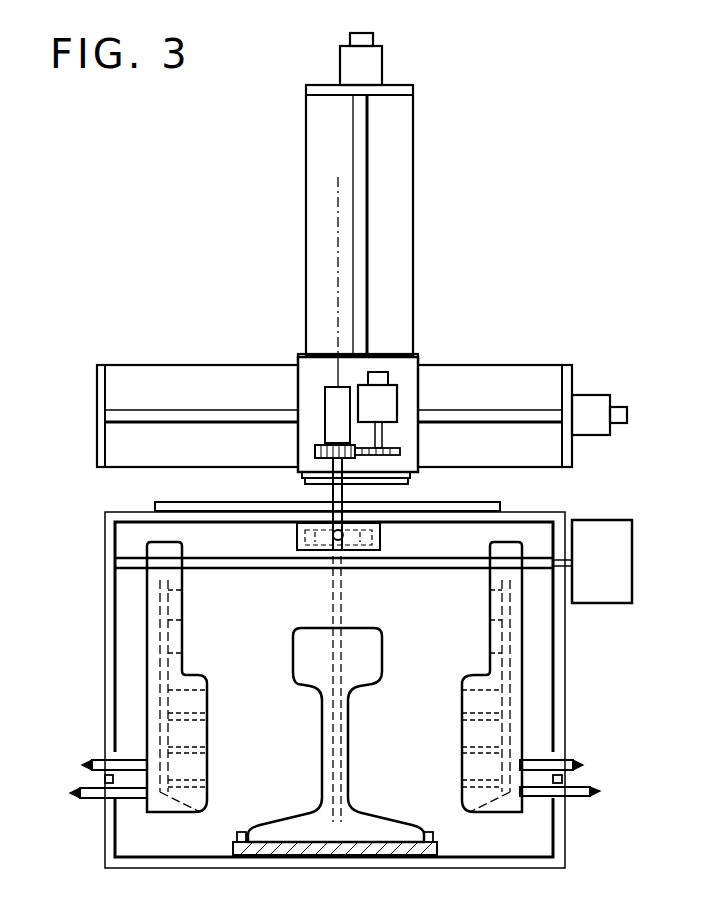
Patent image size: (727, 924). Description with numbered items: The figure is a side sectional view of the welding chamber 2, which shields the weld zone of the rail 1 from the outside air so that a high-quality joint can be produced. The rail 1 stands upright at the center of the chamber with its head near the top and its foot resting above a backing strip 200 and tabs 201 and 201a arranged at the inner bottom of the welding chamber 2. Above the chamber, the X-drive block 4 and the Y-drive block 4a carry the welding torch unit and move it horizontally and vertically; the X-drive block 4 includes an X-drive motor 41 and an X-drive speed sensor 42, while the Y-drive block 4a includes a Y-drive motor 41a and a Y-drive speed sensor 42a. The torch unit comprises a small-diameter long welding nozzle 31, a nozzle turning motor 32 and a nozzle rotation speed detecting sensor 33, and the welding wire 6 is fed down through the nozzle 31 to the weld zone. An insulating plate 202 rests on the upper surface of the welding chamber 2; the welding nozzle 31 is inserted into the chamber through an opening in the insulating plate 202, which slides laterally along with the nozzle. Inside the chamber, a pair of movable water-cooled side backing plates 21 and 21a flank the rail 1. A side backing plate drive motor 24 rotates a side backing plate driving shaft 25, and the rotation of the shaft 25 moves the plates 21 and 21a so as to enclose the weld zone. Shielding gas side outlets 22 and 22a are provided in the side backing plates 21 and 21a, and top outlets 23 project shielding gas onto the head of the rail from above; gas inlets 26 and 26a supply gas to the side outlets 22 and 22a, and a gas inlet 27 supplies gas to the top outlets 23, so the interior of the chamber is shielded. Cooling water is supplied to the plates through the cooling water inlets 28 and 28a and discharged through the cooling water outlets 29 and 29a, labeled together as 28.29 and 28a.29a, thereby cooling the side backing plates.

The rail 1 is at (305, 672).
The welding chamber 2 is at (105, 578).
The X-drive block 4 is at (505, 365).
The Y-drive block 4a is at (395, 228).
The welding wire 6 is at (336, 256).
The movable water-cooled side backing plate 21 is at (522, 705).
The movable water-cooled side backing plate 21a is at (147, 658).
The shielding gas side outlet 22 is at (490, 653).
The shielding gas side outlet 22a is at (182, 653).
The top outlet 23 is at (297, 537).
The side backing plate drive motor 24 is at (632, 585).
The side backing plate driving shaft 25 is at (365, 568).
The gas inlet 26 is at (578, 800).
The gas inlet 26a is at (100, 800).
The gas inlet 27 is at (344, 533).
The cooling water inlet and outlet 28.29 is at (585, 742).
The cooling water inlet 28 is at (546, 765).
The cooling water outlet 29 is at (578, 762).
The cooling water inlet and outlet 28a.29a is at (81, 744).
The cooling water inlet 28a is at (119, 765).
The cooling water outlet 29a is at (95, 762).
The welding nozzle 31 is at (330, 488).
The nozzle turning motor 32 is at (387, 410).
The nozzle rotation speed detecting sensor 33 is at (388, 372).
The X-drive motor 41 is at (600, 392).
The Y-drive motor 41a is at (370, 67).
The X-drive speed sensor 42 is at (620, 405).
The Y-drive speed sensor 42a is at (374, 38).
The backing strip 200 is at (315, 850).
The tab 201 is at (433, 838).
The tab 201a is at (240, 850).
The insulating plate 202 is at (505, 502).